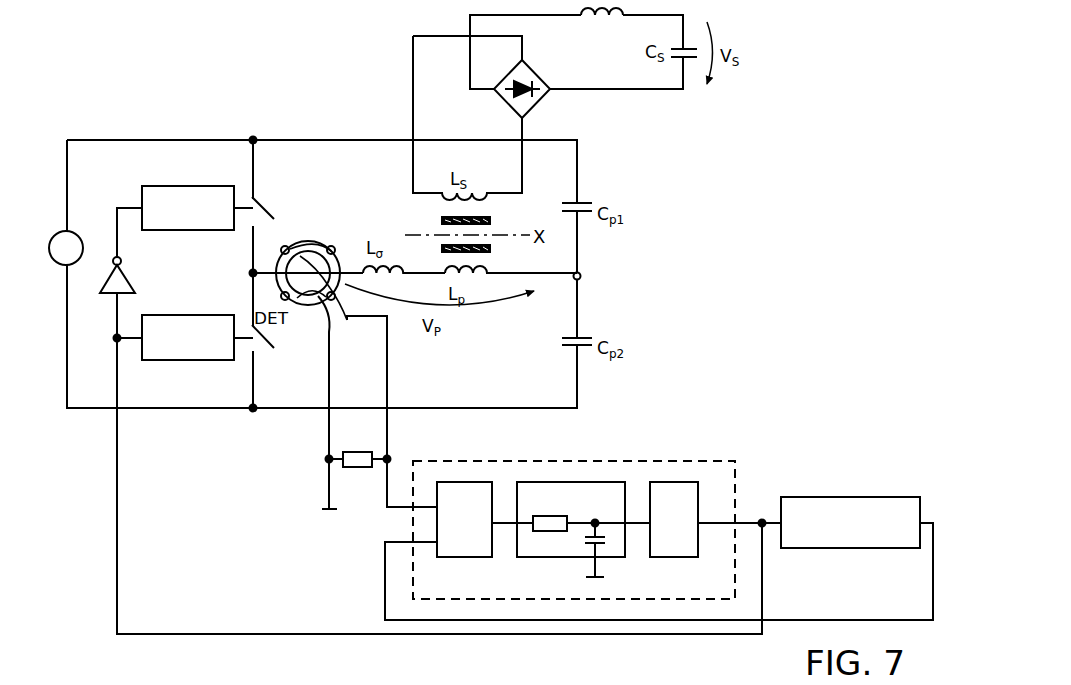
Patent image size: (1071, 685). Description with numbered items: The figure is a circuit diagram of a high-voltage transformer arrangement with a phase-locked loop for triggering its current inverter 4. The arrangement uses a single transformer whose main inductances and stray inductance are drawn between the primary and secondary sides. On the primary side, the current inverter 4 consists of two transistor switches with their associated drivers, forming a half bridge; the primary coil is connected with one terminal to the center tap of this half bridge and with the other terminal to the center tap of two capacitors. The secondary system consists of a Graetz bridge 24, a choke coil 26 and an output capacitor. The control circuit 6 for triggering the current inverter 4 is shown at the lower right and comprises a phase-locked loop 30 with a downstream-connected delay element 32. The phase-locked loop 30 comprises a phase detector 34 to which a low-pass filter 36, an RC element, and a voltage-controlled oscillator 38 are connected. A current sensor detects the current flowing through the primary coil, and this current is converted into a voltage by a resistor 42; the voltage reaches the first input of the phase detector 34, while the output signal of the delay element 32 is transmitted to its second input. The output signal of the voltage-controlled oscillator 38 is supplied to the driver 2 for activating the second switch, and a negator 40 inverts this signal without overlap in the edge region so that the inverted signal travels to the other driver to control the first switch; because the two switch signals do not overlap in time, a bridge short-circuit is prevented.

The driver 2 is at (78, 237).
The current inverter 4 is at (253, 126).
The control circuit 6 is at (525, 486).
The Graetz bridge 24 is at (537, 103).
The choke coil 26 is at (608, 22).
The phase-locked loop 30 is at (574, 501).
The delay element 32 is at (873, 497).
The phase detector 34 is at (475, 557).
The low-pass filter 36 is at (570, 557).
The voltage-controlled oscillator 38 is at (686, 557).
The negator 40 is at (127, 281).
The resistor 42 is at (358, 469).